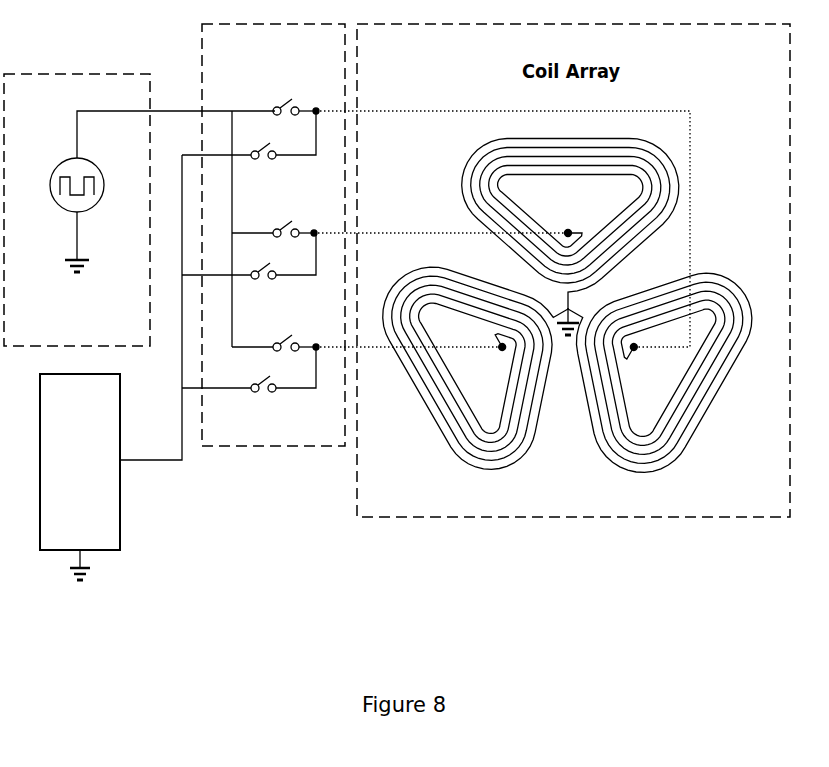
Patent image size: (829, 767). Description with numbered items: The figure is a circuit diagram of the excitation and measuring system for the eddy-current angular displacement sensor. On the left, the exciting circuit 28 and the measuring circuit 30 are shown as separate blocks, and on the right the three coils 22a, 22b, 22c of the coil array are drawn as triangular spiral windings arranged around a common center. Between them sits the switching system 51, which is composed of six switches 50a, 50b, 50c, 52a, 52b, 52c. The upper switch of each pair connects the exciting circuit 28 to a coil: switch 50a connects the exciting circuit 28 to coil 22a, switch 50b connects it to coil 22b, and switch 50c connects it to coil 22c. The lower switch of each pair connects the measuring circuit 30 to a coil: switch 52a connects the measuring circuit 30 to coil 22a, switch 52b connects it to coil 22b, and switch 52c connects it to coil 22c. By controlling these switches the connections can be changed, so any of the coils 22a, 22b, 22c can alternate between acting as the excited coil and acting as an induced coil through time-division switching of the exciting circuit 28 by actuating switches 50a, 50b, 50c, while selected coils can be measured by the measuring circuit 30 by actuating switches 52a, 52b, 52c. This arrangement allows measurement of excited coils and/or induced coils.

The exciting circuit 28 is at (125, 97).
The measuring circuit 30 is at (99, 520).
The switching system 51 is at (223, 430).
The switch 50a is at (296, 98).
The switch 50b is at (274, 219).
The switch 50c is at (275, 335).
The switch 52a is at (249, 149).
The switch 52b is at (249, 271).
The switch 52c is at (249, 384).
The coil 22a is at (640, 353).
The coil 22b is at (570, 225).
The coil 22c is at (493, 350).